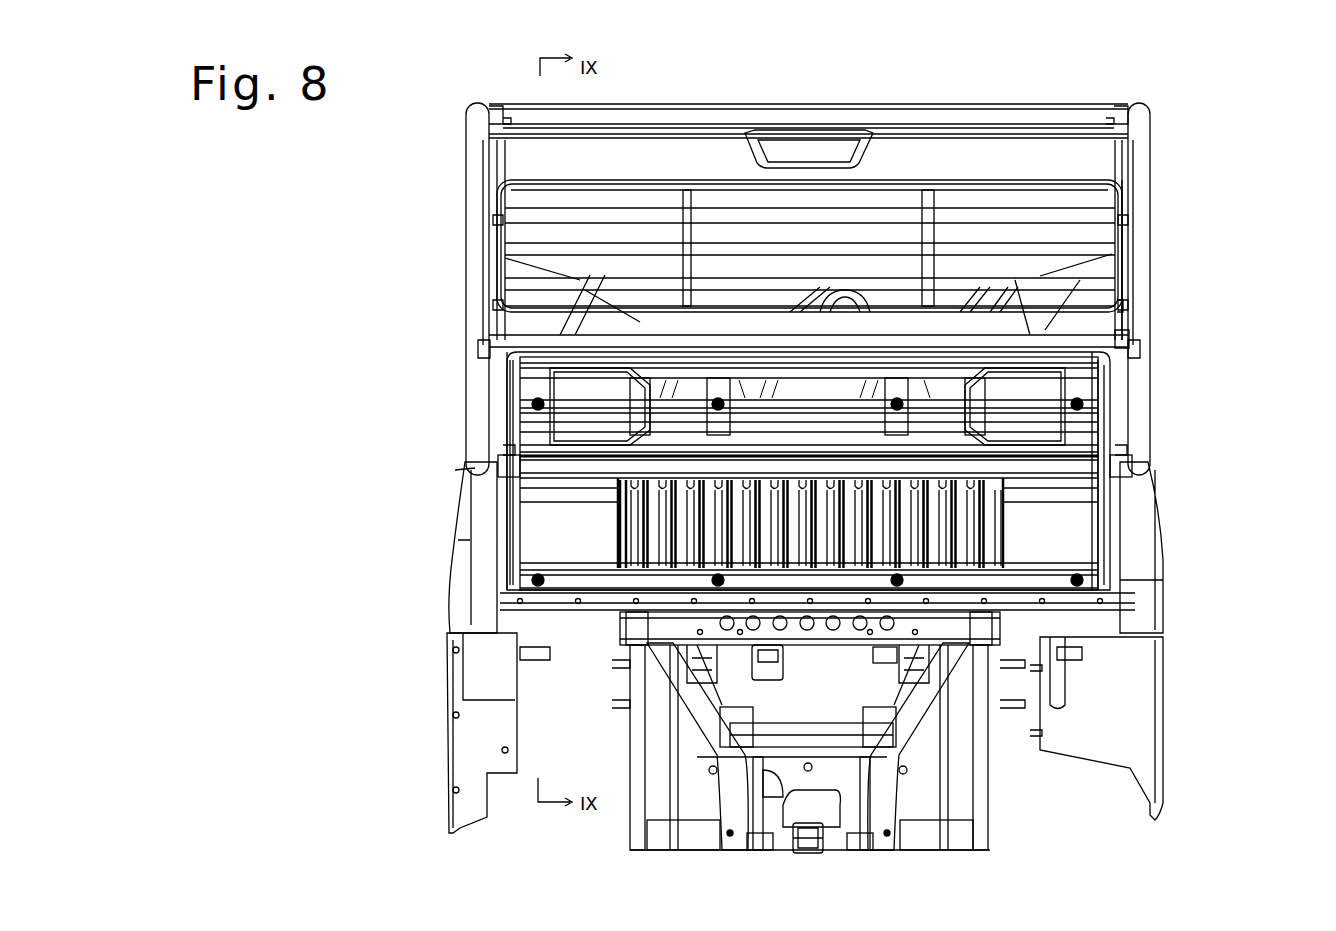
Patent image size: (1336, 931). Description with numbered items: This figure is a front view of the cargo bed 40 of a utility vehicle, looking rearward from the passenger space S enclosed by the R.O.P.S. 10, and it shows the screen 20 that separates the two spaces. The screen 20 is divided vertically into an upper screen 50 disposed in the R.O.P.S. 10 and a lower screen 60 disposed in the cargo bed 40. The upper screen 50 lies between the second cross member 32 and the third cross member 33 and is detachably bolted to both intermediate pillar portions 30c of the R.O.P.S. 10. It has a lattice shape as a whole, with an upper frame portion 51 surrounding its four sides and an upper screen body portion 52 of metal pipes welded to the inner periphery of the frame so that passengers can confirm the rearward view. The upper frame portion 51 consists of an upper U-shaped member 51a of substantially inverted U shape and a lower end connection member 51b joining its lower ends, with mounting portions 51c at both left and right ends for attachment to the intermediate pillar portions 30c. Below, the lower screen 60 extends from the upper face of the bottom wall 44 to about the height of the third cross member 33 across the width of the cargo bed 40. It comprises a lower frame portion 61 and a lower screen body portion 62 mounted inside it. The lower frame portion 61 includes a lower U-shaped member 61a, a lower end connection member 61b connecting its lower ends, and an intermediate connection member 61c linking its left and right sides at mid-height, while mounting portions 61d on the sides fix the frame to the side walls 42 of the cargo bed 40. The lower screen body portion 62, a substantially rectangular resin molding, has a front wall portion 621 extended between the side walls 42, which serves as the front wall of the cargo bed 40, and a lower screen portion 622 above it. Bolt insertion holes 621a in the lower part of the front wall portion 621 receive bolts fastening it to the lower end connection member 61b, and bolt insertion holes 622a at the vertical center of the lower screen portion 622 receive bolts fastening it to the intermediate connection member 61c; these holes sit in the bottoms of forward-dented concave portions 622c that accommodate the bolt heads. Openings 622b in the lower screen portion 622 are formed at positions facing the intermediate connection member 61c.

The R.O.P.S. 10 is at (1180, 102).
The screen 20 is at (366, 170).
The intermediate pillar portion 30c is at (494, 398).
The second cross member 32 is at (785, 104).
The third cross member 33 is at (1130, 348).
The cargo bed 40 is at (823, 647).
The side wall 42 is at (466, 564).
The bottom wall 44 is at (1100, 650).
The upper screen 50 is at (820, 240).
The upper frame portion 51 is at (832, 240).
The upper U-shaped member 51a is at (620, 182).
The lower end connection member 51b is at (590, 308).
The mounting portion 51c is at (497, 226).
The upper screen body portion 52 is at (560, 252).
The lower screen 60 is at (838, 383).
The lower frame portion 61 is at (827, 376).
The lower U-shaped member 61a is at (1060, 340).
The lower end connection member 61b is at (1122, 597).
The intermediate connection member 61c is at (484, 368).
The mounting portion 61d is at (496, 465).
The lower screen body portion 62 is at (914, 383).
The front wall portion 621 is at (1125, 535).
The bolt insertion hole 621a is at (612, 598).
The lower screen portion 622 is at (892, 310).
The bolt insertion hole 622a is at (540, 445).
The opening 622b is at (1010, 330).
The concave portion 622c is at (520, 420).
The passenger space S is at (909, 154).